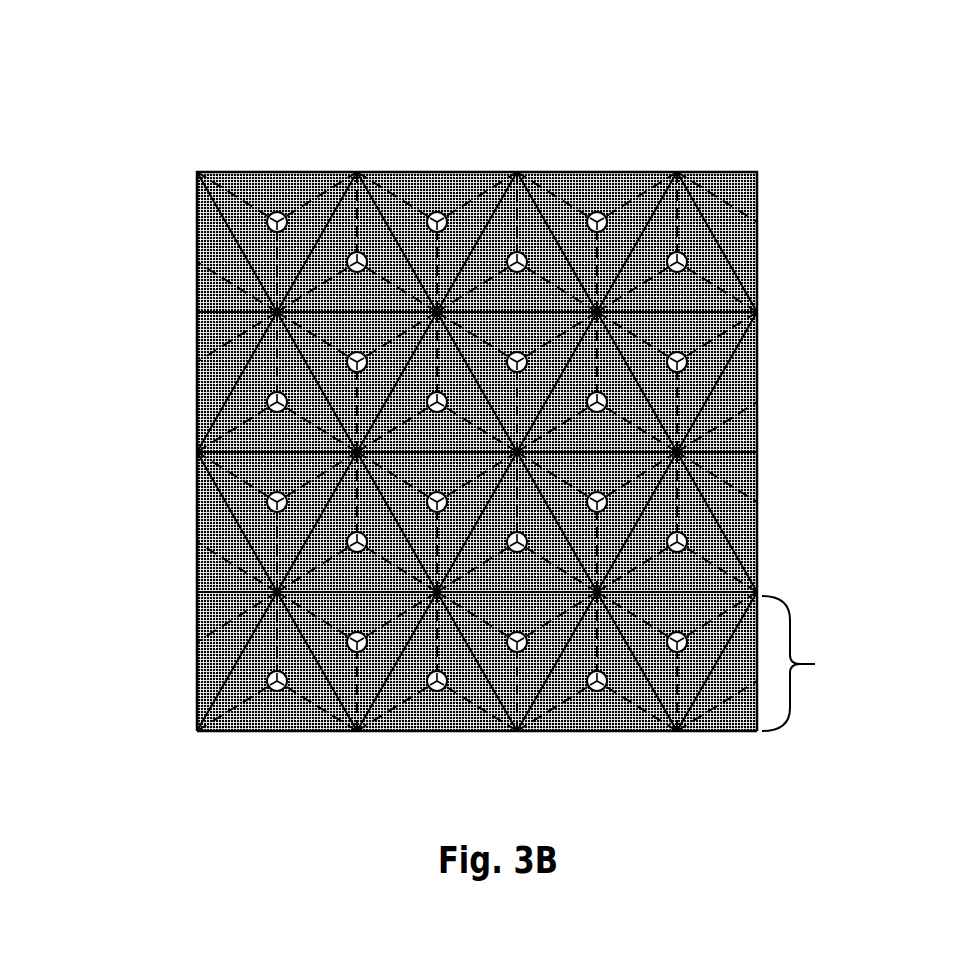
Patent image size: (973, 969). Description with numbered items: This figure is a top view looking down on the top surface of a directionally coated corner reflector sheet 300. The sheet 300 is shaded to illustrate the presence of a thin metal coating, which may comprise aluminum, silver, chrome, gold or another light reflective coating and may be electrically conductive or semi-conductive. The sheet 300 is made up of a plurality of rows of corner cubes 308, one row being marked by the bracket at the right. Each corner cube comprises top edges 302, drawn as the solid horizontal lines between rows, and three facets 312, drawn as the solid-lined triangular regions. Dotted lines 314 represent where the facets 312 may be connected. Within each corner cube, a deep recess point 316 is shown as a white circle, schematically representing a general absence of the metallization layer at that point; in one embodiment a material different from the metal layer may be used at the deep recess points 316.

The corner reflector sheet 300 is at (730, 141).
The top edges 302 is at (728, 259).
The rows of corner cubes 308 is at (540, 663).
The facets 312 is at (437, 195).
The dotted lines 314 is at (555, 195).
The deep recess points 316 is at (277, 212).